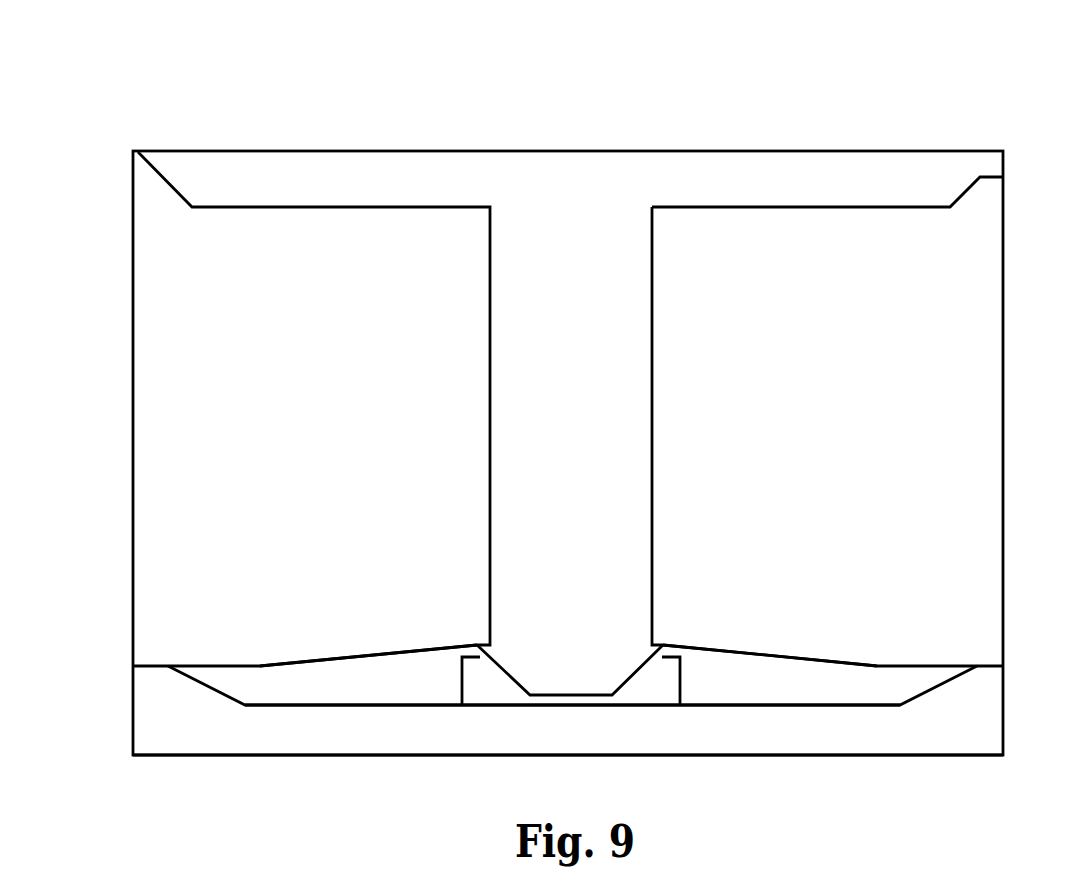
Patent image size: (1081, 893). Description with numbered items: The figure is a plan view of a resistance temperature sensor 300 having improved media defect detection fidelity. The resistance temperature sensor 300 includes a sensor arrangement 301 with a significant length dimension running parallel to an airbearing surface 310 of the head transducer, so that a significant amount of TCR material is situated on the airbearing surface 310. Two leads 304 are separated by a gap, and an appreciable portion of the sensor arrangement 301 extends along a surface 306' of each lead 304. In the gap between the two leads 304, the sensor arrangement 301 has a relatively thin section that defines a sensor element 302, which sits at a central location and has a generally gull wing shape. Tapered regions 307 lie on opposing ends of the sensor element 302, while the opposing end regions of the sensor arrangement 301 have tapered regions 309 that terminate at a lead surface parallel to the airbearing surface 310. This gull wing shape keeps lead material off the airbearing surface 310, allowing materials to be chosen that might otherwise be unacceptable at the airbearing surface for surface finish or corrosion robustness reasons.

The resistance temperature sensor 300 is at (806, 100).
The lead 304 is at (163, 432).
The surface of lead 306' is at (568, 634).
The tapered region 307 is at (503, 664).
The tapered region 309 is at (197, 685).
The sensor element 302 is at (558, 694).
The sensor arrangement 301 is at (728, 686).
The airbearing surface 310 is at (343, 722).